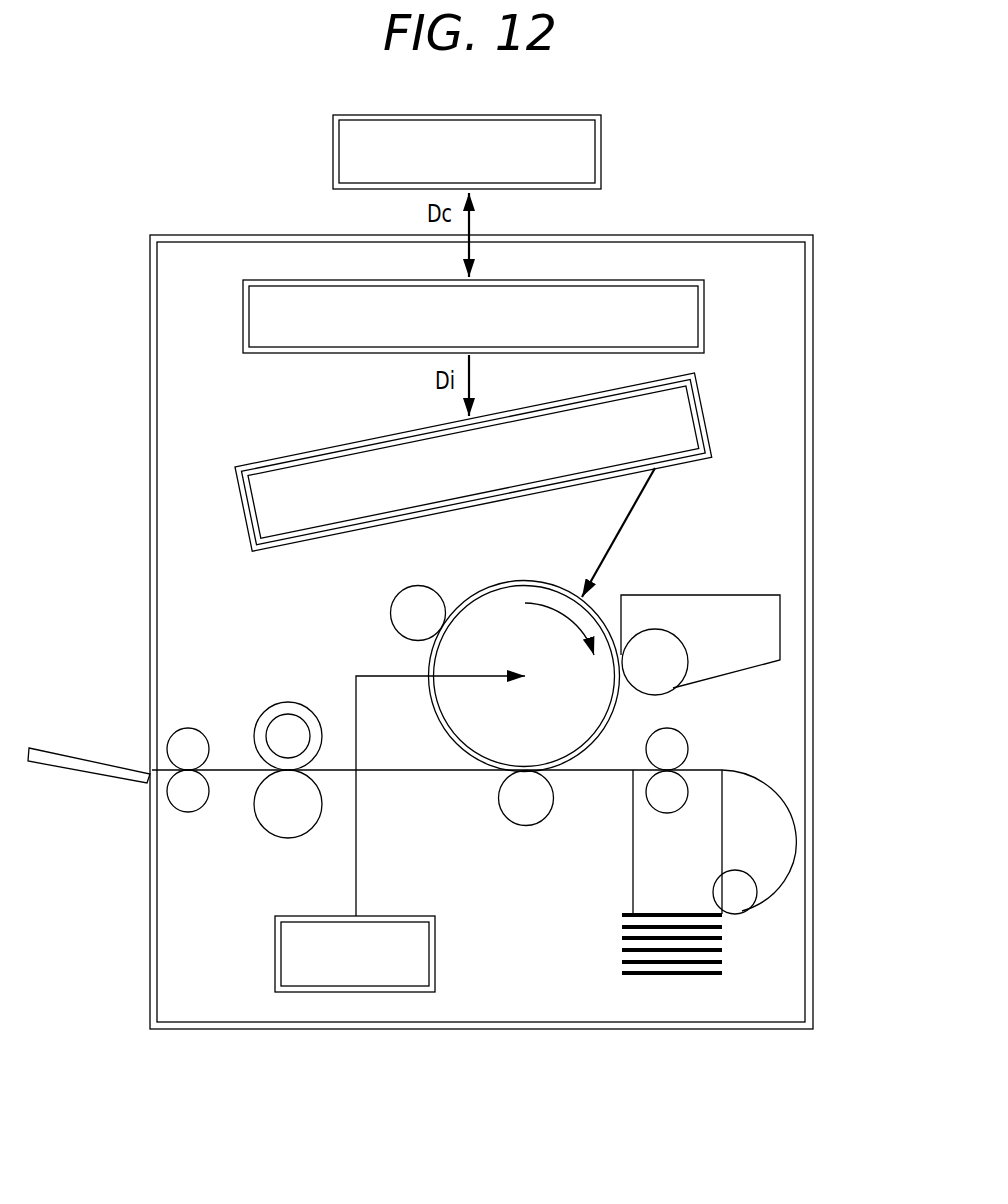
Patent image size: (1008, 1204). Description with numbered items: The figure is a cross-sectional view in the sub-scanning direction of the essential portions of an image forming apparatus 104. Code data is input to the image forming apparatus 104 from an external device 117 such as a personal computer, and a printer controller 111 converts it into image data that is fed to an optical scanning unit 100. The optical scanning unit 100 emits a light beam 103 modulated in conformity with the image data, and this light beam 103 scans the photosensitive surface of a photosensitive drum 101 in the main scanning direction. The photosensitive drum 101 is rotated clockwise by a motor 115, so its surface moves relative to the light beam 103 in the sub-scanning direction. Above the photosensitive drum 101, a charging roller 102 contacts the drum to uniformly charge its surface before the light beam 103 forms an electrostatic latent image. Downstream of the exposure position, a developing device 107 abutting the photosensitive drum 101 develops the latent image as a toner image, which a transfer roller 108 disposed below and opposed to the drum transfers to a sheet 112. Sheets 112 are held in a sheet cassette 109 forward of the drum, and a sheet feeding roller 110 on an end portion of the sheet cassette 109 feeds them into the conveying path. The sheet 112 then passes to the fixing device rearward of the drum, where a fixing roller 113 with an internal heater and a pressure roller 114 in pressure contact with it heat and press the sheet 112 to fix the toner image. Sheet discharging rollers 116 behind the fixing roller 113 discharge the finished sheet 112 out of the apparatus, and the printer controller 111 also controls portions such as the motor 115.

The optical scanning unit 100 is at (305, 452).
The photosensitive drum 101 is at (600, 706).
The charging roller 102 is at (390, 613).
The light beam 103 is at (628, 516).
The image forming apparatus 104 is at (770, 222).
The developing device 107 is at (770, 615).
The transfer roller 108 is at (523, 824).
The sheet cassette 109 is at (625, 938).
The sheet feeding roller 110 is at (728, 887).
The printer controller 111 is at (704, 310).
The sheet 112 is at (392, 771).
The fixing roller 113 is at (280, 727).
The pressure roller 114 is at (260, 824).
The motor 115 is at (275, 953).
The sheet discharging rollers 116 is at (202, 728).
The external device 117 is at (601, 146).